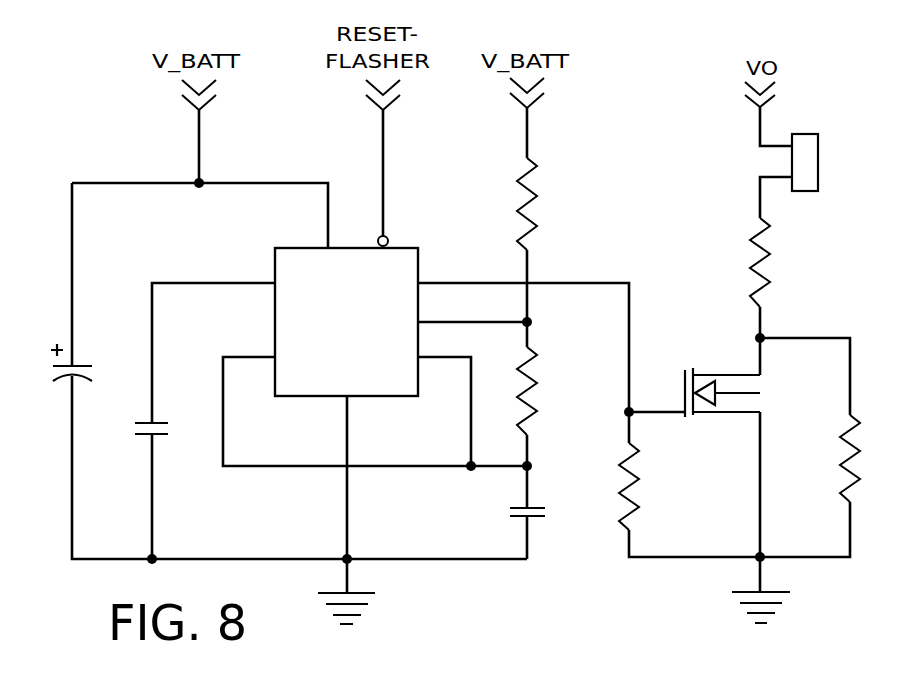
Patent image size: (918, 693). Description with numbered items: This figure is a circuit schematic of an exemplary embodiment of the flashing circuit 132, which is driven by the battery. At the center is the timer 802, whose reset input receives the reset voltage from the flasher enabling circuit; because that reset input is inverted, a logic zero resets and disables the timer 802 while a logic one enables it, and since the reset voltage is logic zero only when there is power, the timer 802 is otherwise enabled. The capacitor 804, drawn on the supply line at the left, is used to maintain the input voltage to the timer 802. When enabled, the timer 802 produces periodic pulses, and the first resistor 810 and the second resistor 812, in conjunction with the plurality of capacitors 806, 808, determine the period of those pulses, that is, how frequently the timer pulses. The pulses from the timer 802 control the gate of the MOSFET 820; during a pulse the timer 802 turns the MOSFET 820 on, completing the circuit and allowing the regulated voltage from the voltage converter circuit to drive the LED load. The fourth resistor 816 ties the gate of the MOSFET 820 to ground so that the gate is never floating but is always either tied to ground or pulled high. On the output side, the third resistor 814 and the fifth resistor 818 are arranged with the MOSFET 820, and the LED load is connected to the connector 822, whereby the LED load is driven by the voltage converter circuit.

The flashing circuit 132 is at (157, 132).
The timer 802 is at (293, 258).
The capacitor 804 is at (80, 366).
The capacitor 806 is at (160, 437).
The capacitor 808 is at (538, 517).
The first resistor 810 is at (530, 212).
The second resistor 812 is at (533, 383).
The third resistor 814 is at (752, 240).
The fourth resistor 816 is at (623, 495).
The fifth resistor 818 is at (845, 462).
The MOSFET 820 is at (702, 403).
The connector 822 is at (802, 133).